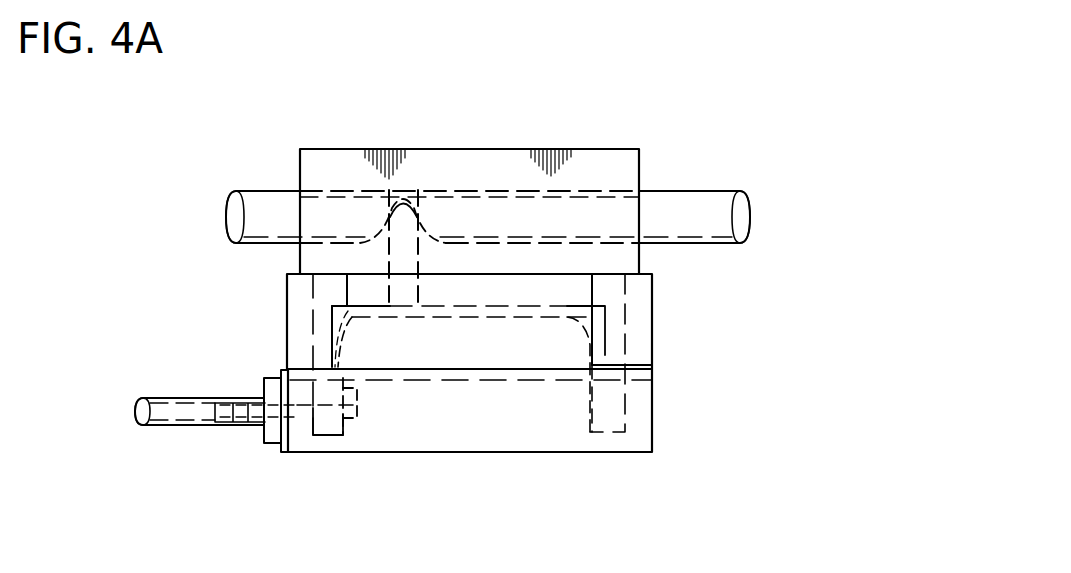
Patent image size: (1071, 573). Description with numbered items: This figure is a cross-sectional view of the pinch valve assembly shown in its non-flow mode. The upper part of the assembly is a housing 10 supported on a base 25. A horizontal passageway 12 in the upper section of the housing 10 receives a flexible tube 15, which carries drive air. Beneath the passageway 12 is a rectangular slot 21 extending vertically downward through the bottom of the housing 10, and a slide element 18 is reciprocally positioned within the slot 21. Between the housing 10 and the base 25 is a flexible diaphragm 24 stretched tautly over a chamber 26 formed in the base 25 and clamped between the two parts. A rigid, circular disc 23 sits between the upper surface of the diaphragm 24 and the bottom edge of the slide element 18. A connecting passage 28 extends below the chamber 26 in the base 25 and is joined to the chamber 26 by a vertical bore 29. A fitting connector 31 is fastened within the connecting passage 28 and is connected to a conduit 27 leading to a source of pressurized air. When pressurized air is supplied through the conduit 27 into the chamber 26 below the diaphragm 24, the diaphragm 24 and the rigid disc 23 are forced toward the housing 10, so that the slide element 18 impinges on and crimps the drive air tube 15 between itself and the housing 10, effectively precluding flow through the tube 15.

The housing 10 is at (513, 162).
The passageway 12 is at (355, 191).
The flexible tube 15 is at (258, 212).
The slide element 18 is at (404, 230).
The rectangular slot 21 is at (420, 243).
The rigid circular disc 23 is at (332, 313).
The flexible diaphragm 24 is at (592, 343).
The base 25 is at (640, 412).
The chamber 26 is at (553, 347).
The conduit 27 is at (190, 413).
The connecting passage 28 is at (321, 412).
The vertical bore 29 is at (340, 387).
The fitting connector 31 is at (247, 425).